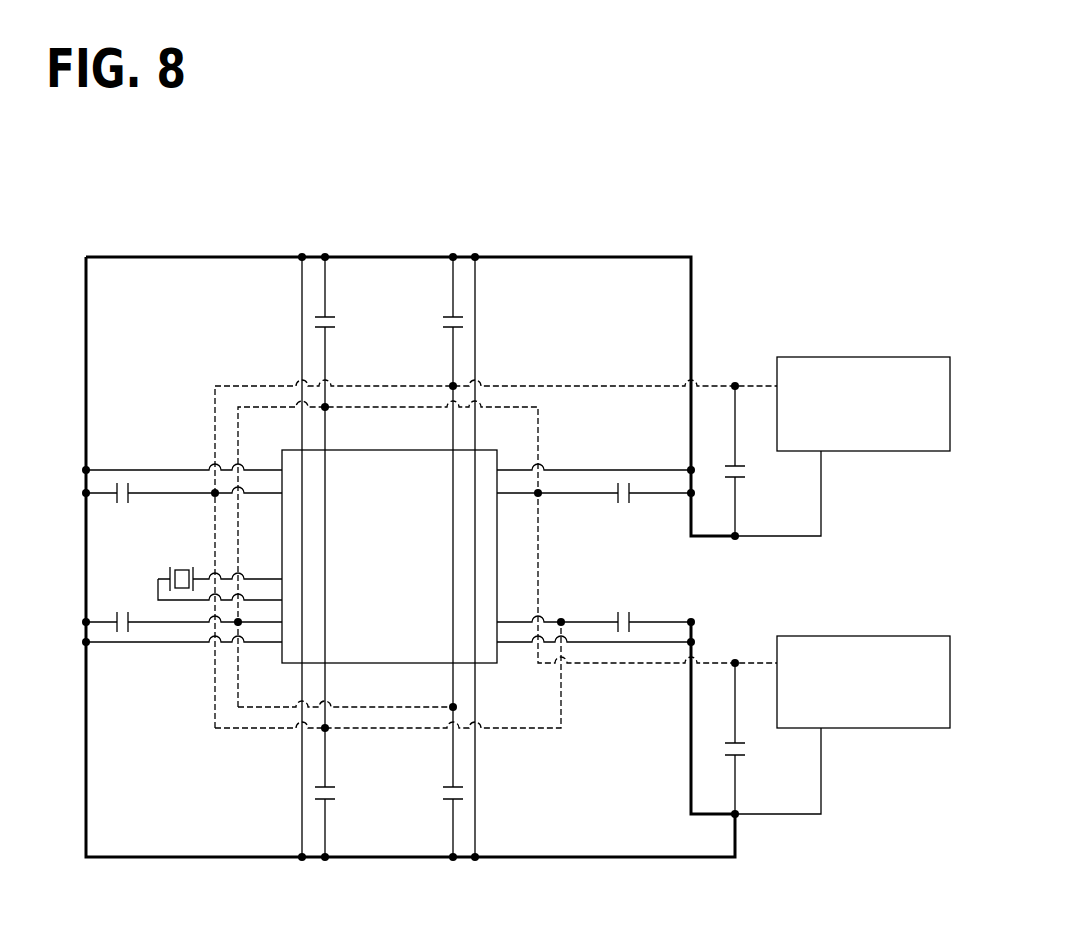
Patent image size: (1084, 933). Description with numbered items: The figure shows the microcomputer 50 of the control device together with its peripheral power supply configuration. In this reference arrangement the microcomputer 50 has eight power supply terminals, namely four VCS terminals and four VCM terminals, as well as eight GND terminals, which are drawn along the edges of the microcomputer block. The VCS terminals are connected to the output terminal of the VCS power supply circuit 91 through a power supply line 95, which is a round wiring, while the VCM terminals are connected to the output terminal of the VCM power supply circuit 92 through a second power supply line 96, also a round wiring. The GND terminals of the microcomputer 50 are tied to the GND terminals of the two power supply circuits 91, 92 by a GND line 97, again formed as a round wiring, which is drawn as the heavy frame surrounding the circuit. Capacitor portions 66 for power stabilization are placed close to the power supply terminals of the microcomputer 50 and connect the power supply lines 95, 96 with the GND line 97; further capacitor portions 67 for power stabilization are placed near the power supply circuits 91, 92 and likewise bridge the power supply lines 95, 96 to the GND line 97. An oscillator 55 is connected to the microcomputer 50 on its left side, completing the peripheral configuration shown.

The microcomputer 50 is at (282, 655).
The oscillator 55 is at (178, 567).
The capacitor portions 66 is at (336, 327).
The capacitor portions 67 is at (748, 478).
The VCS power supply circuit 91 is at (894, 636).
The VCM power supply circuit 92 is at (894, 357).
The power supply line 95 is at (540, 430).
The power supply line 96 is at (579, 386).
The GND line 97 is at (583, 860).